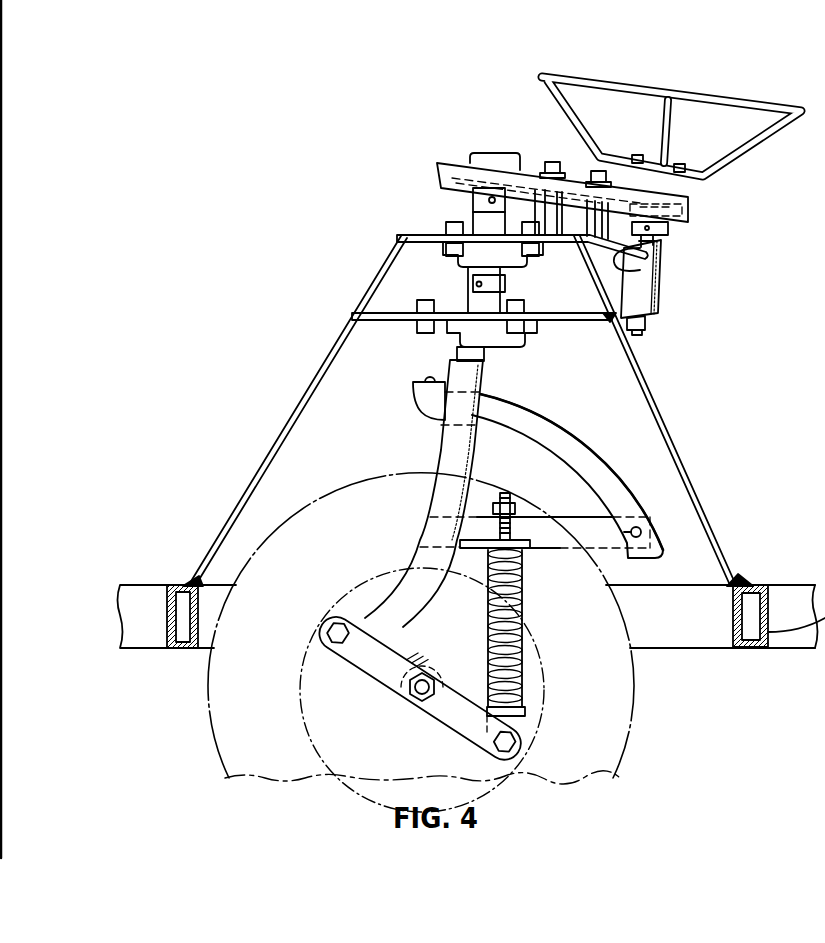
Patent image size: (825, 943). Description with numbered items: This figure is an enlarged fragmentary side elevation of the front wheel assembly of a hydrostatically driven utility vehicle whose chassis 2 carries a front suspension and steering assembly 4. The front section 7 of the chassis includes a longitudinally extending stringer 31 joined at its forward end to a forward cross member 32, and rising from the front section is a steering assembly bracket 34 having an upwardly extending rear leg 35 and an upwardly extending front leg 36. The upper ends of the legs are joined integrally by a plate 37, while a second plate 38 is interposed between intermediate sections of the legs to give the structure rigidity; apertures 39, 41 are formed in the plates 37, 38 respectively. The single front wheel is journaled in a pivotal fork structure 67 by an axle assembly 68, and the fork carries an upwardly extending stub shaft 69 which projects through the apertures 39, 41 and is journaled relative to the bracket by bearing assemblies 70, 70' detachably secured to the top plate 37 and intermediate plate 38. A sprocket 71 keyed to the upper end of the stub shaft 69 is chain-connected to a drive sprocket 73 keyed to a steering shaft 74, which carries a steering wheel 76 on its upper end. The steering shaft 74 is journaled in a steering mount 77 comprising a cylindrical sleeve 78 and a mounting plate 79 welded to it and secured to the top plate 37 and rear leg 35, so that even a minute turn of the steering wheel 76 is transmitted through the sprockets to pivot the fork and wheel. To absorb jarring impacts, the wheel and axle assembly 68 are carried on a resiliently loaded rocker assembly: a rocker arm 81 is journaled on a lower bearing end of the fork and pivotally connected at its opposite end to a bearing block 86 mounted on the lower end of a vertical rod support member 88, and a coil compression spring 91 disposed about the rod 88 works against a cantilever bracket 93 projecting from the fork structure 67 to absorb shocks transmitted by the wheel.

The chassis 2 is at (781, 656).
The front suspension and steering assembly 4 is at (297, 378).
The front section 7 is at (789, 578).
The stringer 31 is at (672, 638).
The forward cross member 32 is at (180, 628).
The steering assembly bracket 34 is at (665, 409).
The rear leg 35 is at (700, 481).
The front leg 36 is at (296, 411).
The plate 37 is at (398, 234).
The second plate 38 is at (588, 320).
The aperture 39 is at (452, 230).
The aperture 41 is at (458, 312).
The fork structure 67 is at (430, 450).
The axle assembly 68 is at (405, 714).
The stub shaft 69 is at (463, 351).
The bearing assembly 70 is at (504, 268).
The bearing assembly 70' is at (485, 347).
The sprocket 71 is at (463, 173).
The drive sprocket 73 is at (690, 202).
The steering shaft 74 is at (660, 236).
The steering wheel 76 is at (707, 97).
The steering mount 77 is at (664, 314).
The cylindrical sleeve 78 is at (647, 292).
The mounting plate 79 is at (657, 269).
The rocker arm 81 is at (365, 679).
The bearing block 86 is at (520, 712).
The vertical rod support member 88 is at (513, 527).
The coil compression spring 91 is at (520, 590).
The cantilever bracket 93 is at (560, 541).